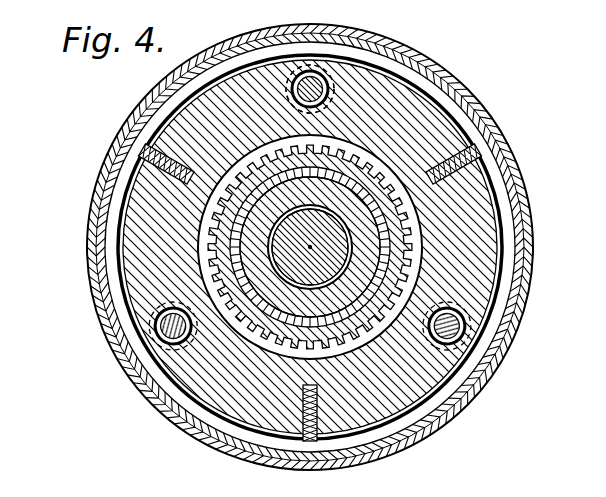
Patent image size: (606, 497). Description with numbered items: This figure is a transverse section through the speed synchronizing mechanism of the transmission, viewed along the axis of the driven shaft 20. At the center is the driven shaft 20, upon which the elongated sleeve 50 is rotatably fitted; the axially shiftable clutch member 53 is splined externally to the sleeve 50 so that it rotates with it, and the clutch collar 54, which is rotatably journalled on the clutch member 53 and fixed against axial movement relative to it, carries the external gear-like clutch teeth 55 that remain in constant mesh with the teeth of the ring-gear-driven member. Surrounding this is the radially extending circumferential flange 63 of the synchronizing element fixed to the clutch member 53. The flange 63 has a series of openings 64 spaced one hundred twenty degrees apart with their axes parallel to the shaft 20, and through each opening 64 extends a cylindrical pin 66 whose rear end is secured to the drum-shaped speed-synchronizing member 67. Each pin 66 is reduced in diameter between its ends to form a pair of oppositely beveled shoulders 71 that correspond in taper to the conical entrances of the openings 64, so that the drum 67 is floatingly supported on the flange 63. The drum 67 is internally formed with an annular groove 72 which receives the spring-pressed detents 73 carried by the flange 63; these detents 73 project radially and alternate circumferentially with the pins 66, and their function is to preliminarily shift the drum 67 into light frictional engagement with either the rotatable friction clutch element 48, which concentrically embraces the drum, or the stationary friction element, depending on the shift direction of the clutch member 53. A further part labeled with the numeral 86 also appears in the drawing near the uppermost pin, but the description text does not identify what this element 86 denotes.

The driven shaft 20 is at (300, 270).
The friction clutch element 48 is at (447, 76).
The elongated sleeve 50 is at (302, 293).
The axially shiftable clutch member 53 is at (243, 233).
The clutch collar 54 is at (227, 208).
The clutch teeth 55 is at (345, 200).
The circumferential flange 63 is at (466, 248).
The openings 64 is at (323, 85).
The cylindrical pin 66 is at (471, 330).
The speed-synchronizing member 67 is at (458, 108).
The beveled shoulders 71 is at (325, 77).
The annular groove 72 is at (143, 126).
The spring-pressed detents 73 is at (478, 150).
The bore 86 is at (312, 92).